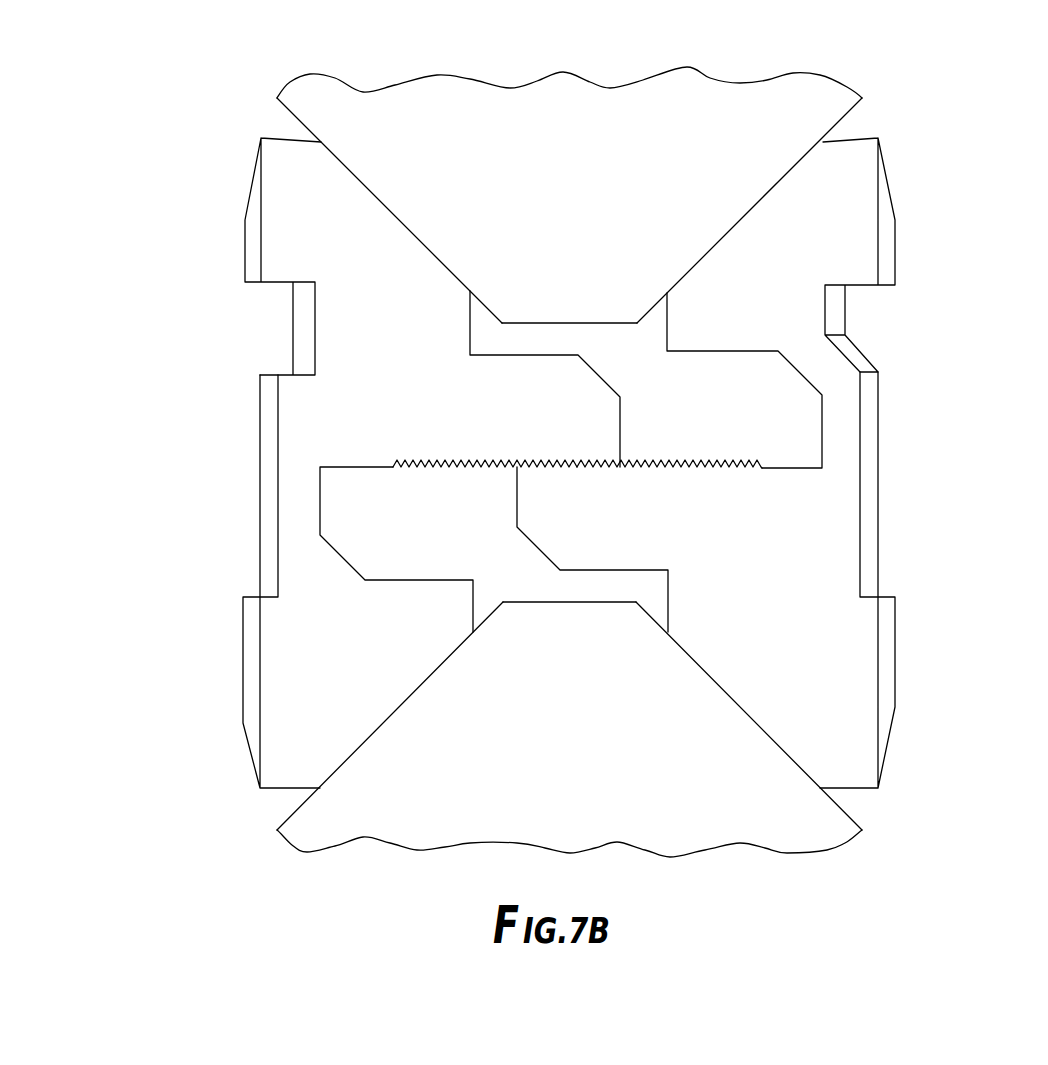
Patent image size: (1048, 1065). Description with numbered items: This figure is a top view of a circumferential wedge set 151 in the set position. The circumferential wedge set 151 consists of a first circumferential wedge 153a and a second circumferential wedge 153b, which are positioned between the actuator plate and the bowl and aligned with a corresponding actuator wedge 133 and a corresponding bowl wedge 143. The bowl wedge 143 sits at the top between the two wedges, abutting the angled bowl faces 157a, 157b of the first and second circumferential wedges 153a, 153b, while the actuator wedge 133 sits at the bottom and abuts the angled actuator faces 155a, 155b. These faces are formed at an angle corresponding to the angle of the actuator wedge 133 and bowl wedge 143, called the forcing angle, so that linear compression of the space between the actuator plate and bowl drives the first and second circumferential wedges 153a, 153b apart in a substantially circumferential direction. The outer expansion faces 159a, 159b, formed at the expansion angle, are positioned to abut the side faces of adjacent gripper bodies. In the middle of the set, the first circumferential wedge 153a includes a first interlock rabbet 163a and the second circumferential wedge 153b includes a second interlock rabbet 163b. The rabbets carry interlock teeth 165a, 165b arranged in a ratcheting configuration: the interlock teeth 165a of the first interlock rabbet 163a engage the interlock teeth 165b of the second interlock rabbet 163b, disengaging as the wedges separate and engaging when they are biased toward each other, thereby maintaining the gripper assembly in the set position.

The circumferential wedge set 151 is at (113, 181).
The bowl wedge 143 is at (660, 204).
The actuator wedge 133 is at (536, 686).
The bowl face 157a is at (378, 197).
The bowl face 157b is at (781, 177).
The actuator face 155a is at (382, 728).
The actuator face 155b is at (763, 733).
The first circumferential wedge 153a is at (272, 136).
The second circumferential wedge 153b is at (867, 137).
The expansion face 159a is at (268, 537).
The expansion face 159b is at (867, 500).
The first interlock rabbet 163a is at (540, 382).
The second interlock rabbet 163b is at (587, 545).
The interlock teeth 165a is at (457, 463).
The interlock teeth 165b is at (678, 460).